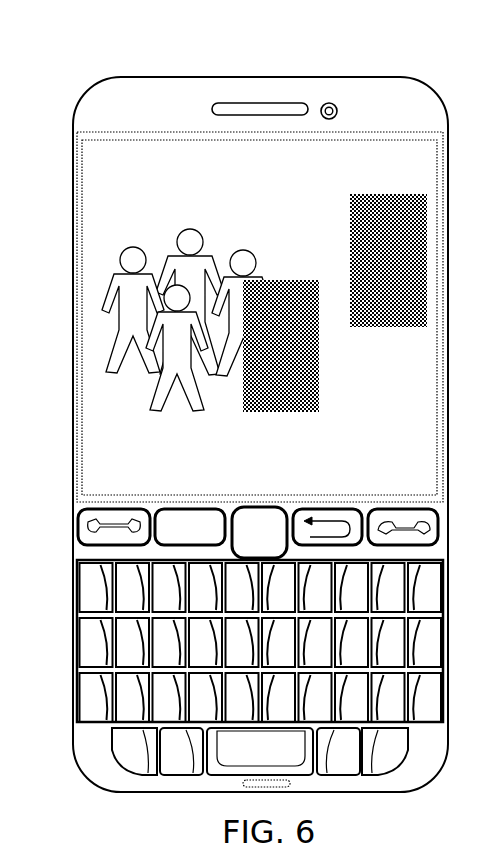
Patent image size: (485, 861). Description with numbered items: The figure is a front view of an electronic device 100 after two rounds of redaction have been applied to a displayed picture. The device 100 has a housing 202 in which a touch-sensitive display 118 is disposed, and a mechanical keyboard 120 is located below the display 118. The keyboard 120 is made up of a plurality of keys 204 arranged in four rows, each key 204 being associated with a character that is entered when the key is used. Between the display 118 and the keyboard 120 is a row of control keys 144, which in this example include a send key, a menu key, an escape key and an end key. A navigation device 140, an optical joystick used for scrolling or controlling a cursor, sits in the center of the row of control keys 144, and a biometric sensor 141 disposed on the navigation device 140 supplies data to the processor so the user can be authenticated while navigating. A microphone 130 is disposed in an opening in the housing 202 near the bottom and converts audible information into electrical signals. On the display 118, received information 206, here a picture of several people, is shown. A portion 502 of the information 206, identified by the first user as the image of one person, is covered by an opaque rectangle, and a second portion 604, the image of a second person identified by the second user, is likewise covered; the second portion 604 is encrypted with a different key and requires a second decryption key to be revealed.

The electronic device 100 is at (229, 425).
The touch-sensitive display 118 is at (77, 273).
The mechanical keyboard 120 is at (229, 657).
The microphone 130 is at (243, 785).
The navigation device 140 is at (225, 471).
The biometric sensor 141 is at (263, 523).
The control keys 144 is at (160, 508).
The housing 202 is at (72, 232).
The keys 204 is at (133, 588).
The information 206 is at (107, 328).
The portion 502 is at (164, 283).
The second portion 604 is at (372, 195).